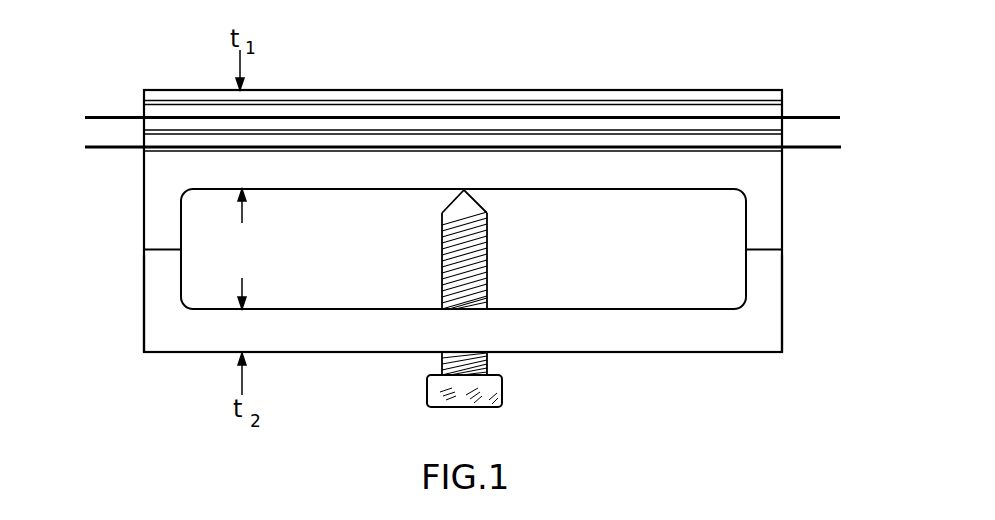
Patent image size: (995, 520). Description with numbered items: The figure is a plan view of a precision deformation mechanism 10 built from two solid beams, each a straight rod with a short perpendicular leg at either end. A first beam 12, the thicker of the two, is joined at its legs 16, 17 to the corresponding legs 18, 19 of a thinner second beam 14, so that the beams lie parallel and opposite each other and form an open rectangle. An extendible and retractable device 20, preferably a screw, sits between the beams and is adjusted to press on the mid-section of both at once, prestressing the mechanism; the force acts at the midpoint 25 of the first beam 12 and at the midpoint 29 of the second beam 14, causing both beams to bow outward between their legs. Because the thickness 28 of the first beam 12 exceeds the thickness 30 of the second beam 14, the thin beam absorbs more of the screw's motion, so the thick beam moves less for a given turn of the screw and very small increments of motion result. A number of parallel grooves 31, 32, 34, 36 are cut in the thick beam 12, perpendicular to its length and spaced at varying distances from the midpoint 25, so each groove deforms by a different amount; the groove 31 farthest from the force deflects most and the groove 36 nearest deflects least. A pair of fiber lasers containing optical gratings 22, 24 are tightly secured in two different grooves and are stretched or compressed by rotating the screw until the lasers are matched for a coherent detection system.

The mechanism 10 is at (138, 391).
The first beam 12 is at (307, 92).
The second beam 14 is at (318, 334).
The leg 16 is at (160, 228).
The leg 17 is at (767, 223).
The leg 18 is at (160, 291).
The leg 19 is at (767, 287).
The extendible and retractable device 20 is at (502, 388).
The fiber laser containing optical grating 22 is at (108, 116).
The fiber laser containing optical grating 24 is at (108, 146).
The midpoint of first beam 25 is at (464, 190).
The thickness of first beam 28 is at (238, 70).
The midpoint of second beam 29 is at (462, 312).
The thickness of second beam 30 is at (241, 373).
The groove 31 is at (588, 100).
The groove 32 is at (623, 117).
The groove 34 is at (662, 130).
The groove 36 is at (725, 145).